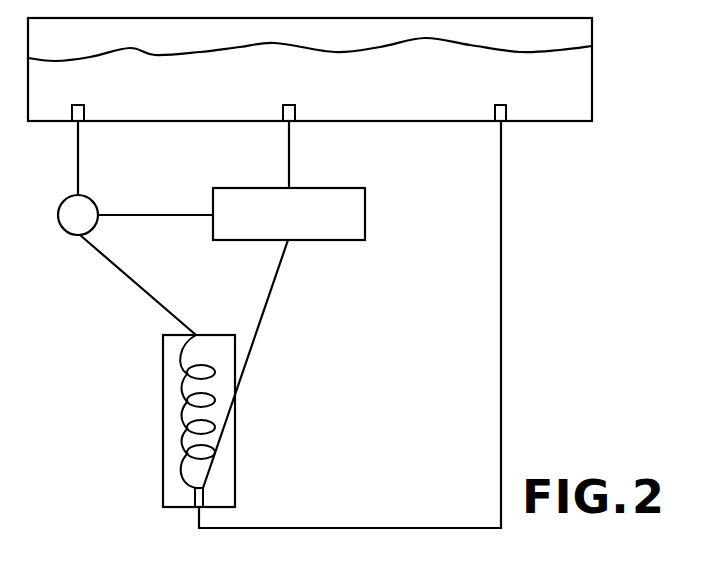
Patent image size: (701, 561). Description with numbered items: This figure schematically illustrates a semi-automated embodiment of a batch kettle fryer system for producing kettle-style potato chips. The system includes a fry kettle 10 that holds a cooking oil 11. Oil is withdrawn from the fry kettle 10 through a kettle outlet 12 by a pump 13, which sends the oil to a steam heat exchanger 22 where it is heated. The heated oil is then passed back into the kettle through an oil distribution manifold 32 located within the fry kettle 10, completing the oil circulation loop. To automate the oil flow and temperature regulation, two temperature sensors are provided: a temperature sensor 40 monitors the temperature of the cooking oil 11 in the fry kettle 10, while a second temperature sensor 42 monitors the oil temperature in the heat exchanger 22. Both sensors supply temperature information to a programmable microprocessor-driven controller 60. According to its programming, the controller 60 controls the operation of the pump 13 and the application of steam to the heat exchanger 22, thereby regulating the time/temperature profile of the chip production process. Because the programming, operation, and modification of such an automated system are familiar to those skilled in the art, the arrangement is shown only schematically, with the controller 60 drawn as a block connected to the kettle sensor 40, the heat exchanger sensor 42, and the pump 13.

The fry kettle 10 is at (592, 75).
The cooking oil 11 is at (302, 86).
The kettle outlet 12 is at (84, 106).
The pump 13 is at (96, 225).
The steam heat exchanger 22 is at (160, 418).
The oil distribution manifold 32 is at (506, 106).
The temperature sensor 40 is at (295, 106).
The temperature sensor 42 is at (203, 500).
The programmable microprocessor-driven controller 60 is at (305, 228).